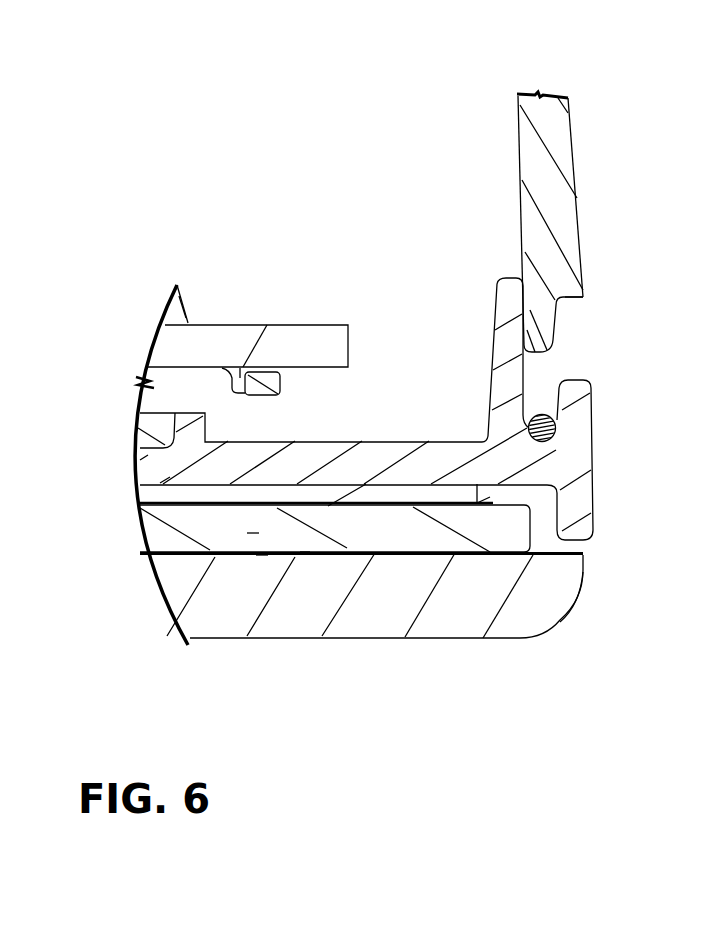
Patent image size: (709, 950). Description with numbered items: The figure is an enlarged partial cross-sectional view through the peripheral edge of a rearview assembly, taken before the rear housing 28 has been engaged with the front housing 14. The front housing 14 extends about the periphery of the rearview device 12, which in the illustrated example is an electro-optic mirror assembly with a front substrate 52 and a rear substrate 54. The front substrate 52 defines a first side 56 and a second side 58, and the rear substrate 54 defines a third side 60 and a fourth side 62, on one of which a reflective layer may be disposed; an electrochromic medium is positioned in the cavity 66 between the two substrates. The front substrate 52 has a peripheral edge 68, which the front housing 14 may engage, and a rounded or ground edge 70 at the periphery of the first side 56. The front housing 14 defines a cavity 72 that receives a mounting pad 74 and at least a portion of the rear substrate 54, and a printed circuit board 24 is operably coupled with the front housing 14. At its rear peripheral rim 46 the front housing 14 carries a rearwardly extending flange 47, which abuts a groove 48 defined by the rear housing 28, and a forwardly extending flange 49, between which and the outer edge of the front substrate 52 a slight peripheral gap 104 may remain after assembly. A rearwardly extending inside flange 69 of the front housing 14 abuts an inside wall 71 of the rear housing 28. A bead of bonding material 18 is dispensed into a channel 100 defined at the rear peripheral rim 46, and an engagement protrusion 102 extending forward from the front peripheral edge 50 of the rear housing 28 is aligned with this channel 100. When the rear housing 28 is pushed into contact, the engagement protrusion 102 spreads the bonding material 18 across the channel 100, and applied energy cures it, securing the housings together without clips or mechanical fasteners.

The rearview device 12 is at (553, 648).
The front housing 14 is at (382, 457).
The bonding material 18 is at (566, 445).
The printed circuit board 24 is at (288, 342).
The rear housing 28 is at (560, 138).
The rear peripheral rim 46 is at (573, 473).
The rearwardly extending flange 47 is at (578, 396).
The groove 48 is at (565, 308).
The forwardly extending flange 49 is at (575, 530).
The front peripheral edge 50 is at (565, 282).
The front substrate 52 is at (400, 612).
The rear substrate 54 is at (252, 532).
The first side 56 is at (481, 639).
The second side 58 is at (262, 553).
The third side 60 is at (308, 553).
The fourth side 62 is at (352, 506).
The cavity 66 is at (182, 552).
The peripheral edge 68 is at (575, 553).
The rearwardly extending inside flange 69 is at (503, 297).
The rounded or ground edge 70 is at (570, 608).
The inside wall 71 is at (522, 268).
The cavity 72 is at (492, 493).
The mounting pad 74 is at (183, 493).
The channel 100 is at (543, 397).
The engagement protrusion 102 is at (550, 327).
The peripheral gap 104 is at (572, 547).